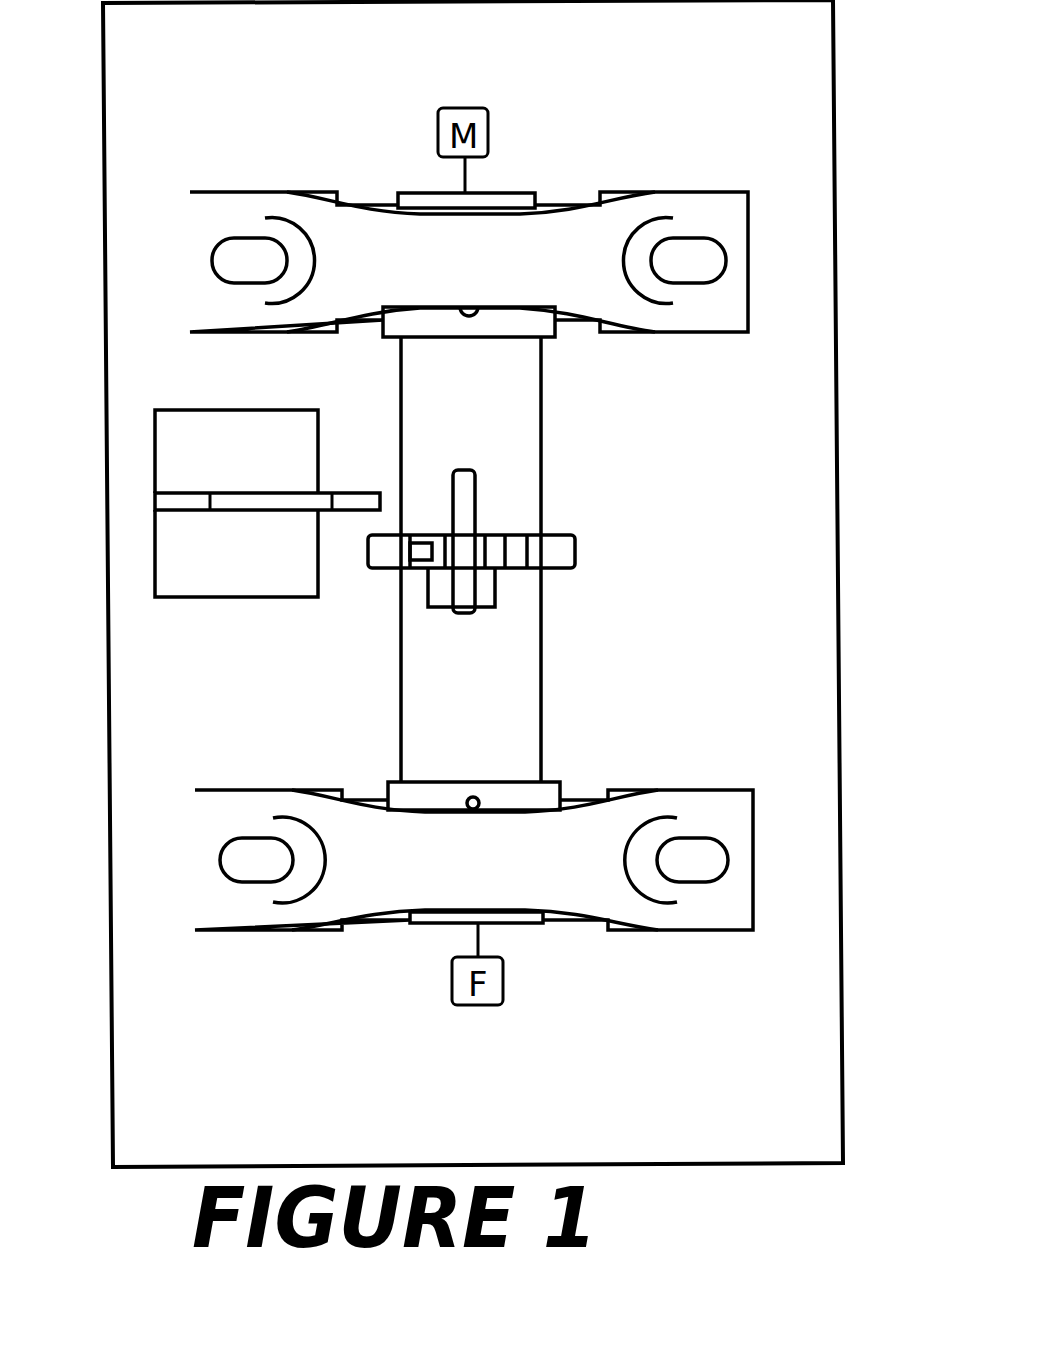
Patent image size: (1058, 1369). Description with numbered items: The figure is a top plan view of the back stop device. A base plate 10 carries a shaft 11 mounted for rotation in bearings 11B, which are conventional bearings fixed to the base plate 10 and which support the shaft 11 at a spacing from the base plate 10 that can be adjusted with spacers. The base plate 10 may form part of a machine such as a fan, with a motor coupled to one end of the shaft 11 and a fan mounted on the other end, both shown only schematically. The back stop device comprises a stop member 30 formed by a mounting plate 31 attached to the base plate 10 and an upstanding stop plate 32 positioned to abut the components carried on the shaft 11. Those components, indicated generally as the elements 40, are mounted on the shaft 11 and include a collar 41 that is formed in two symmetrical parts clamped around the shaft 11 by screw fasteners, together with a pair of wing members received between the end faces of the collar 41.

The base plate 10 is at (803, 608).
The shaft 11 is at (510, 408).
The bearings 11B is at (717, 217).
The stop member 30 is at (170, 443).
The mounting plate 31 is at (172, 528).
The stop plate 32 is at (247, 513).
The elements mounted on the shaft 40 is at (592, 539).
The collar 41 is at (553, 548).